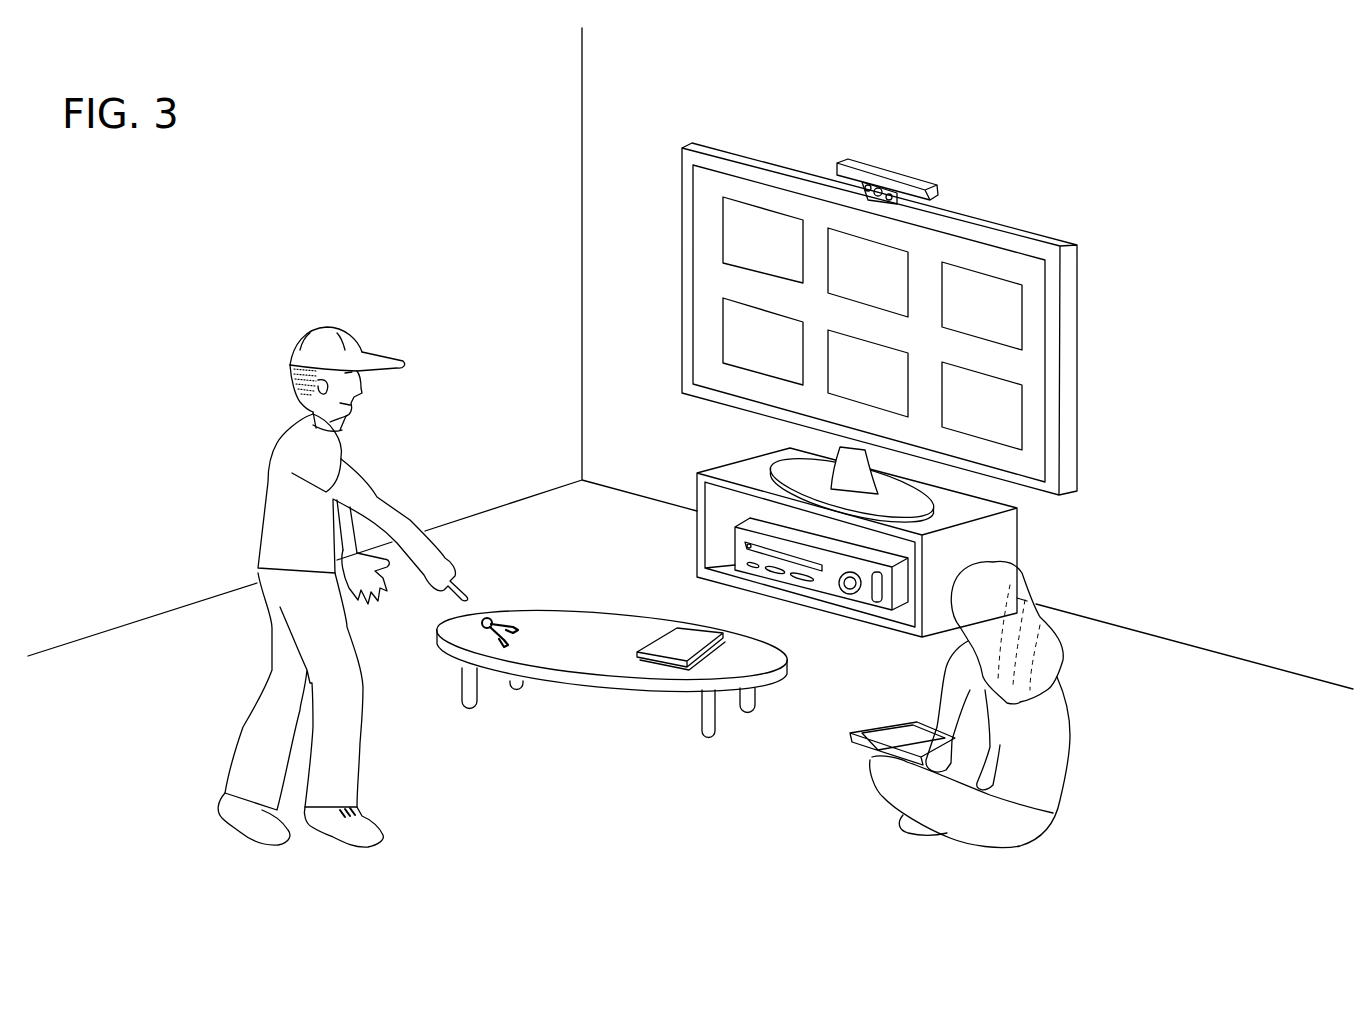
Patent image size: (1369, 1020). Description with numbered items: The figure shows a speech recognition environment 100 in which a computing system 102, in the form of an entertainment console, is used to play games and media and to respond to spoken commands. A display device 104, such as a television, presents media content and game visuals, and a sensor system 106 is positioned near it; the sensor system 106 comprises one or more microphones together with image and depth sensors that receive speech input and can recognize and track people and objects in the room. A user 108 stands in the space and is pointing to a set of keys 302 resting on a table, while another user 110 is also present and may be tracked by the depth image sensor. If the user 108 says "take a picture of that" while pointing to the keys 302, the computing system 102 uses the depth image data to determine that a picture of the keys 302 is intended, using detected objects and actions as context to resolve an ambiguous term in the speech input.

The speech recognition environment 100 is at (912, 374).
The computing system 102 is at (830, 594).
The display device 104 is at (1078, 378).
The sensor system 106 is at (912, 177).
The user 108 is at (277, 443).
The another user 110 is at (1067, 737).
The set of keys 302 is at (495, 618).